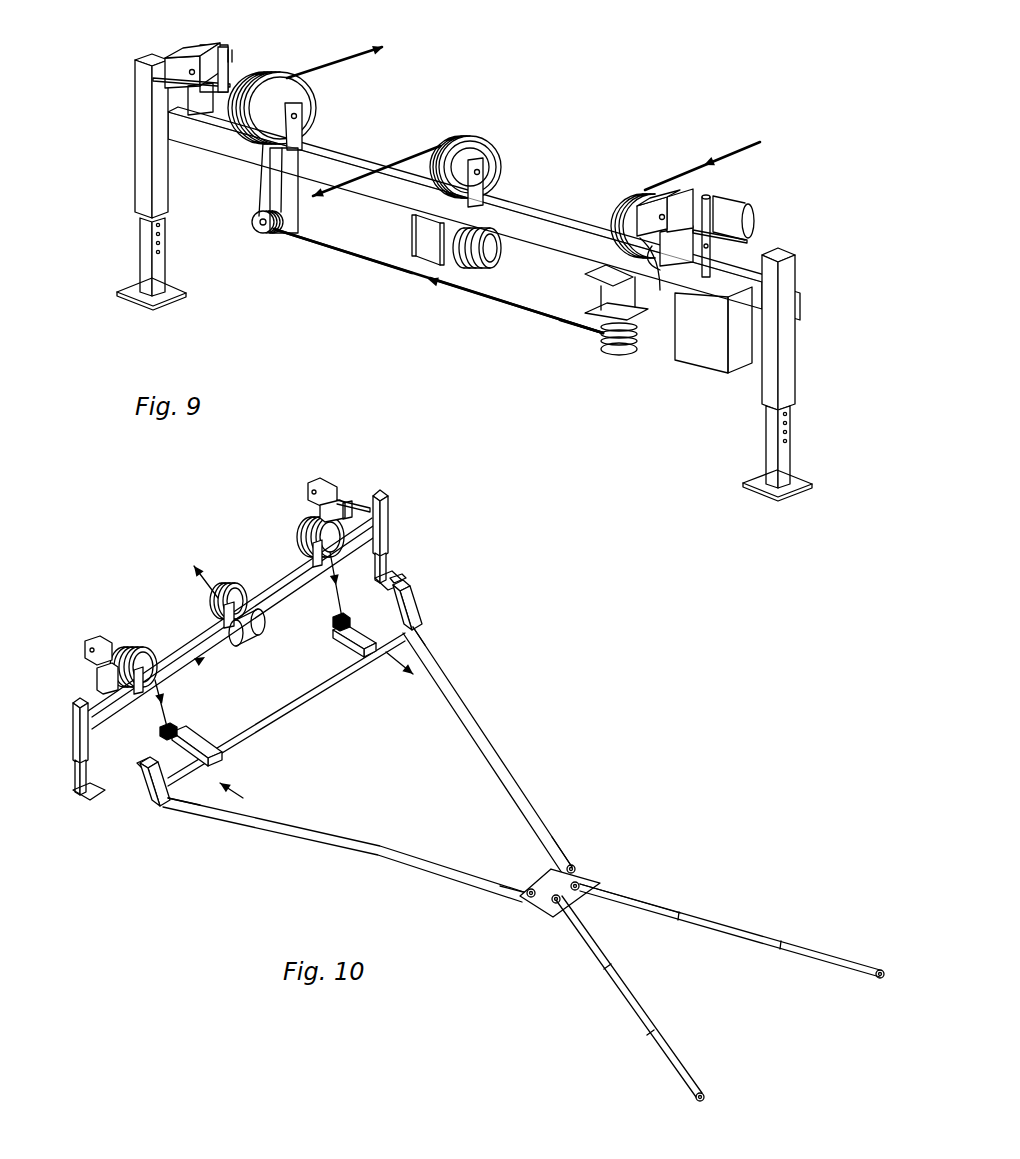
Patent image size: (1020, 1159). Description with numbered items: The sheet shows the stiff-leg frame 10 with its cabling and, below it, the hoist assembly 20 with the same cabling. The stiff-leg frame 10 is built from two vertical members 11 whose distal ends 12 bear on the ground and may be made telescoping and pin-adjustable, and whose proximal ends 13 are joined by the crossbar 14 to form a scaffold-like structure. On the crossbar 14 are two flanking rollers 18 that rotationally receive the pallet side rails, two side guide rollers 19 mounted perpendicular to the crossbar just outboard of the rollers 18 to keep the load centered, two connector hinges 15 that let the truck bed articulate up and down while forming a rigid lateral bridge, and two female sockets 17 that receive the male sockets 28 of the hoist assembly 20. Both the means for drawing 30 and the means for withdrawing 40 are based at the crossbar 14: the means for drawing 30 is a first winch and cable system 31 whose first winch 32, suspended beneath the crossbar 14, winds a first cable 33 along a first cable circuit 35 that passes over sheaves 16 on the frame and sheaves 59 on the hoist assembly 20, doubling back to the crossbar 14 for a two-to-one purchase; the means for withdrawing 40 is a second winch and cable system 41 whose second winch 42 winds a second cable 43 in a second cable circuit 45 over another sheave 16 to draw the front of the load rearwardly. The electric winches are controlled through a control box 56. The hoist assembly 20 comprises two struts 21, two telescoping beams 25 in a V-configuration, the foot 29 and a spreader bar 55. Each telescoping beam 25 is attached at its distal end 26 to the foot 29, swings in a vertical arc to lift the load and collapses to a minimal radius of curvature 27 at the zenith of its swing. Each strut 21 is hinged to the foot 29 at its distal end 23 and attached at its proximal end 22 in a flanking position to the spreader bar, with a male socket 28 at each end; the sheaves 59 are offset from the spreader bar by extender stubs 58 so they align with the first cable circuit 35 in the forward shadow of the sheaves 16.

In FIG. 9, the stiff-leg frame 10 is at (745, 455).
In FIG. 9, the vertical members 11 is at (140, 148).
In FIG. 9, the distal ends 12 is at (785, 447).
In FIG. 9, the proximal ends 13 is at (142, 93).
In FIG. 9, the crossbar 14 is at (507, 208).
In FIG. 9, the connector hinges 15 is at (187, 50).
In FIG. 9, the sheaves 16 is at (310, 102).
In FIG. 10, the sheaves 16 is at (302, 541).
In FIG. 9, the female sockets 17 is at (188, 43).
In FIG. 10, the female sockets 17 is at (365, 495).
In FIG. 9, the rollers 18 is at (252, 75).
In FIG. 9, the side guide rollers 19 is at (220, 53).
In FIG. 10, the hoist assembly 20 is at (265, 833).
In FIG. 10, the struts 21 is at (478, 741).
In FIG. 10, the proximal end 22 is at (427, 668).
In FIG. 10, the distal end 23 is at (557, 850).
In FIG. 10, the telescoping beam 25 is at (627, 888).
In FIG. 10, the distal end 26 is at (607, 887).
In FIG. 10, the minimal radius of curvature 27 is at (415, 613).
In FIG. 10, the male socket 28 is at (403, 585).
In FIG. 10, the foot 29 is at (577, 875).
In FIG. 9, the means for drawing 30 is at (579, 335).
In FIG. 9, the first winch and cable system 31 is at (607, 353).
In FIG. 9, the first winch 32 is at (600, 310).
In FIG. 9, the first cable 33 is at (498, 305).
In FIG. 9, the first cable circuit 35 is at (388, 52).
In FIG. 10, the first cable circuit 35 is at (387, 667).
In FIG. 9, the means for withdrawing 40 is at (408, 267).
In FIG. 9, the second winch and cable system 41 is at (483, 258).
In FIG. 9, the second winch 42 is at (427, 237).
In FIG. 9, the second cable 43 is at (427, 140).
In FIG. 9, the second cable circuit 45 is at (380, 163).
In FIG. 10, the second cable circuit 45 is at (208, 573).
In FIG. 10, the spreader bar 55 is at (297, 715).
In FIG. 9, the control box 56 is at (700, 357).
In FIG. 10, the extender stubs 58 is at (335, 637).
In FIG. 10, the sheaves 59 is at (343, 620).